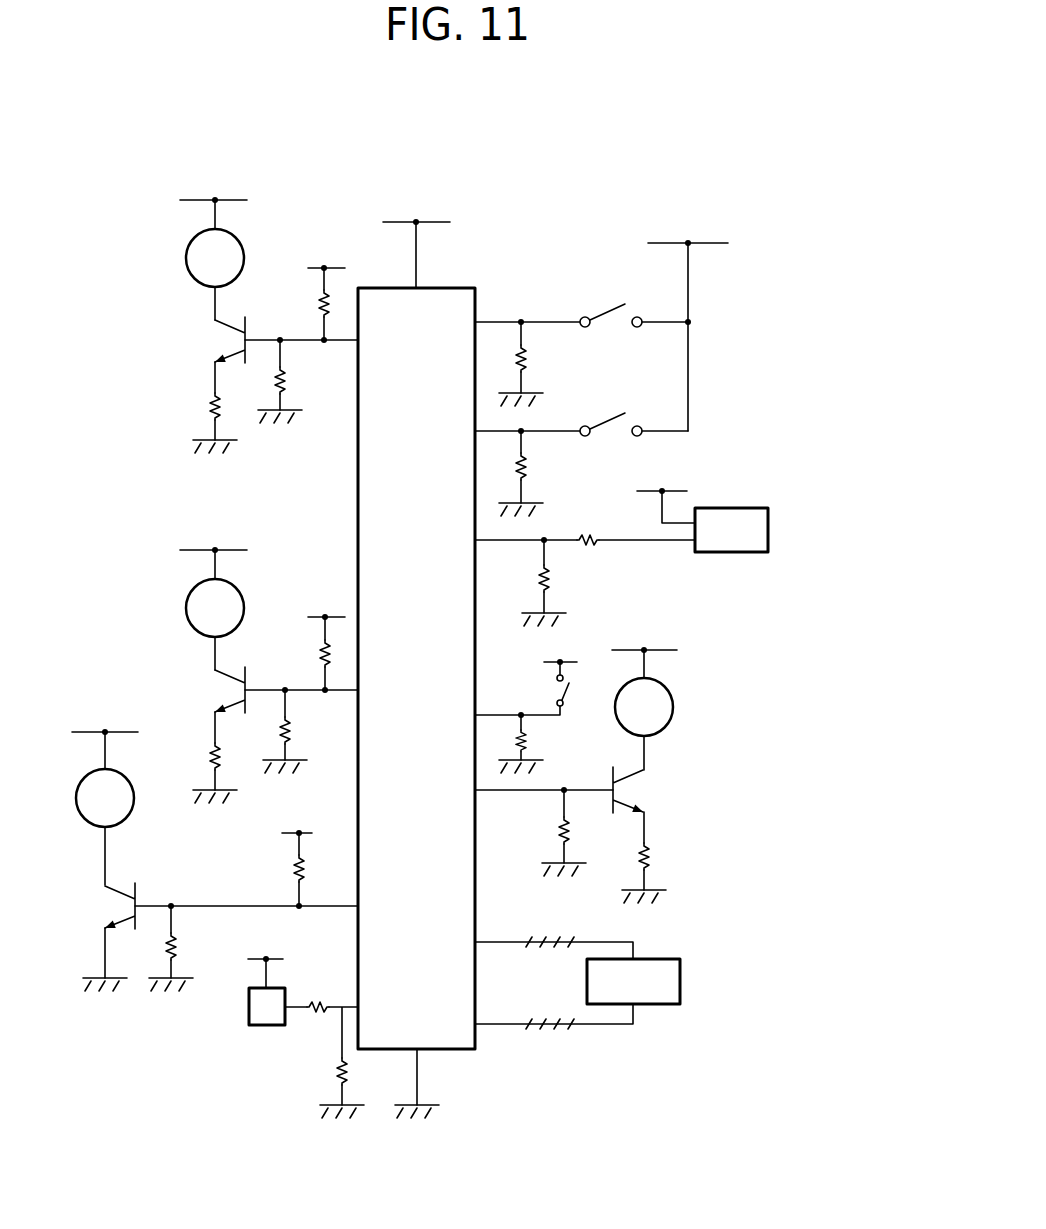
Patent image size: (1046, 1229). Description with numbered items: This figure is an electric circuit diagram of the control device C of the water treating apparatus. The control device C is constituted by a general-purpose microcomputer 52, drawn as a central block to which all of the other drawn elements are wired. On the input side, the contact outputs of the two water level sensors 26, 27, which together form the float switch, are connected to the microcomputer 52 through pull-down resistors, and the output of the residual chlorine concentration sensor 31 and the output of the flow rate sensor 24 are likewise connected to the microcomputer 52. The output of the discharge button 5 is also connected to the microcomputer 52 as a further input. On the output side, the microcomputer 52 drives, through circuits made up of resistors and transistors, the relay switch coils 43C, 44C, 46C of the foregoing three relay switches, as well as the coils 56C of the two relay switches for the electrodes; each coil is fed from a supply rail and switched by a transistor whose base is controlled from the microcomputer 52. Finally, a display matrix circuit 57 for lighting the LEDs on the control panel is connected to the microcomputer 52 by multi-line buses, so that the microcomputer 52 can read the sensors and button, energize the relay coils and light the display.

The control device C is at (383, 162).
The microcomputer 52 is at (460, 287).
The coil of relay switch 44 44C is at (185, 260).
The coil of relay switch 46 46C is at (185, 610).
The coil of relay switch 43 43C is at (88, 827).
The water level sensor 26 is at (607, 312).
The water level sensor 27 is at (607, 421).
The residual chlorine concentration sensor 31 is at (703, 553).
The discharge button 5 is at (553, 693).
The coils of relay switches 56 56C is at (677, 707).
The display matrix circuit 57 is at (662, 958).
The flow rate sensor 24 is at (247, 1016).